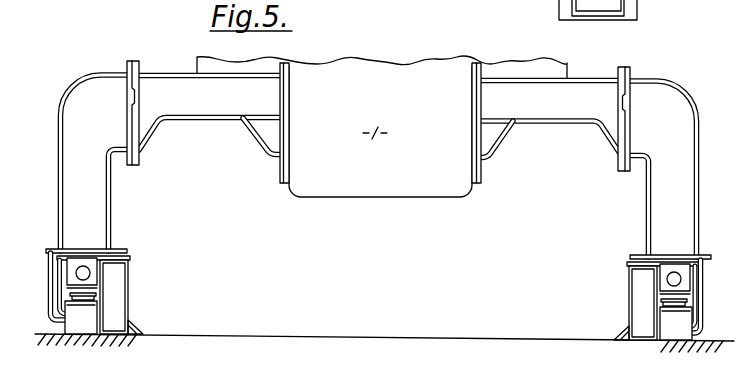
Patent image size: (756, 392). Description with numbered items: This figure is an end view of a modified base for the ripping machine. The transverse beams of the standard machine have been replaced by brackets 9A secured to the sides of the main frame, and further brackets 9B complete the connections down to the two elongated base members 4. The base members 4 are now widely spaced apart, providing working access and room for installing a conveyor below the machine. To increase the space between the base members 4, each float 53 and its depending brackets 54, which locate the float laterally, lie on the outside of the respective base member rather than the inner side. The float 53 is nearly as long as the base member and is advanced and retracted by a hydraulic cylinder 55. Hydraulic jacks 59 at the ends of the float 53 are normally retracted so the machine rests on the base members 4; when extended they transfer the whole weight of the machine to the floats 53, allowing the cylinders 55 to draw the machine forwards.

The base member 4 is at (115, 310).
The bracket 9A is at (175, 85).
The further bracket 9B is at (82, 98).
The float 53 is at (73, 316).
The depending bracket 54 is at (55, 298).
The hydraulic cylinder 55 is at (76, 273).
The hydraulic jack 59 is at (97, 297).